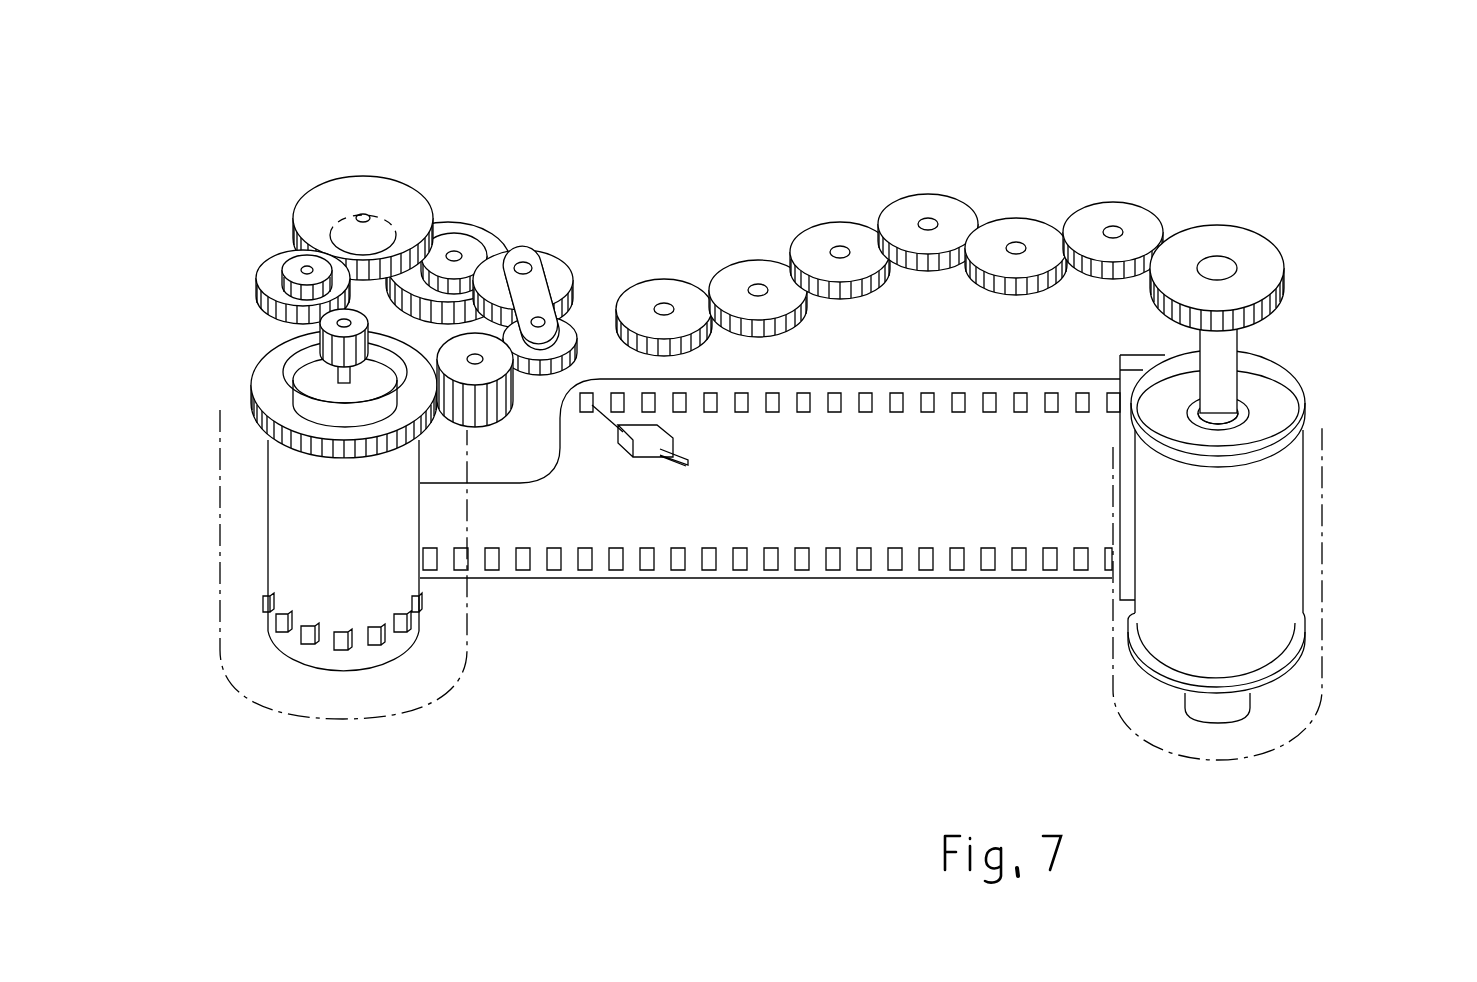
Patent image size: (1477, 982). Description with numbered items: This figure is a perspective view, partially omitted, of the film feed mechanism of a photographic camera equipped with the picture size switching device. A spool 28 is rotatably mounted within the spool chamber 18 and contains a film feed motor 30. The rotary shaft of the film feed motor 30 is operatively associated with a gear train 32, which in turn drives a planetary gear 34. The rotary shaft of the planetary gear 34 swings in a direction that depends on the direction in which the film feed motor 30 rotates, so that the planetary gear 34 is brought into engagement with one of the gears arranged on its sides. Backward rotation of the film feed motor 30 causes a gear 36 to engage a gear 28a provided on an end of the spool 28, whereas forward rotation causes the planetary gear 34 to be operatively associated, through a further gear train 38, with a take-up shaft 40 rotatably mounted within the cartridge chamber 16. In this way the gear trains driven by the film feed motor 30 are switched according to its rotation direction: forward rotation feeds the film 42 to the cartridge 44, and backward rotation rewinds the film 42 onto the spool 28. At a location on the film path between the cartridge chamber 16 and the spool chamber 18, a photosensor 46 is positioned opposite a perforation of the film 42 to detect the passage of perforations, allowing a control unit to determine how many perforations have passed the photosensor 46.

The cartridge chamber 16 is at (1130, 697).
The spool chamber 18 is at (290, 697).
The spool 28 is at (293, 553).
The gear 28a is at (263, 397).
The film feed motor 30 is at (316, 385).
The gear train 32 is at (272, 182).
The planetary gear 34 is at (575, 318).
The gear 36 is at (488, 410).
The gear train 38 is at (988, 164).
The take-up shaft 40 is at (1227, 343).
The film 42 is at (813, 533).
The cartridge 44 is at (1280, 552).
The photosensor 46 is at (623, 445).